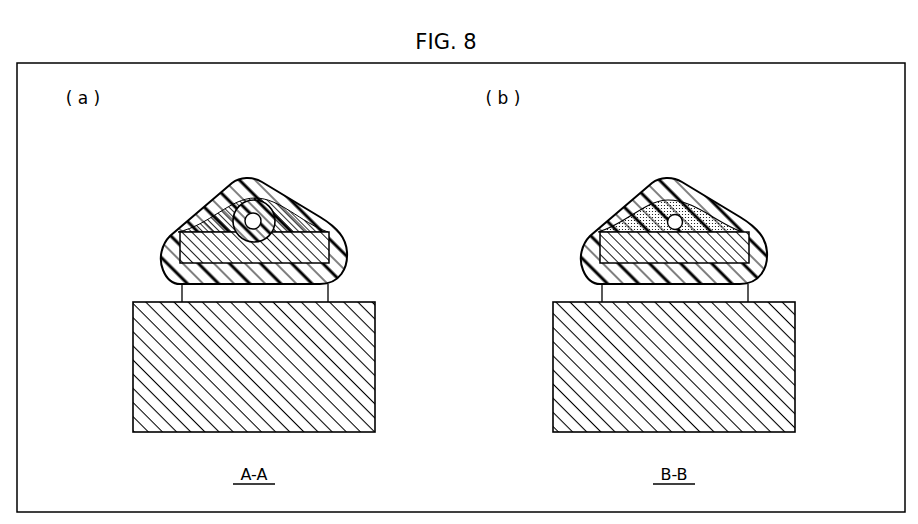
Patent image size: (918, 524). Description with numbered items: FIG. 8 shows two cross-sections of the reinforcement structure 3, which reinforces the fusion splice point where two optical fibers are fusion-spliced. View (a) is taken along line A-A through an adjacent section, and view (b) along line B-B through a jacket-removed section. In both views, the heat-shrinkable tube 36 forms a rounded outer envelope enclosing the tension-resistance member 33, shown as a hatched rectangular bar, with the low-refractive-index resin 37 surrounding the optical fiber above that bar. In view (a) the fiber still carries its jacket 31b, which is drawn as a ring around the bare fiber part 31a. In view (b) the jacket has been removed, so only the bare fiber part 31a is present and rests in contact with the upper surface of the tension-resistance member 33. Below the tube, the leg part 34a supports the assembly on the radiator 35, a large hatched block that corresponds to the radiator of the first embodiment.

The reinforcement structure 3 is at (394, 158).
The bare fiber part 31a is at (210, 222).
The jacket 31b is at (305, 222).
The tension-resistance member 33 is at (330, 247).
The leg part 34a is at (182, 292).
The radiator 35 is at (375, 365).
The heat-shrinkable tube 36 is at (295, 198).
The low-refractive-index resin 37 is at (245, 219).